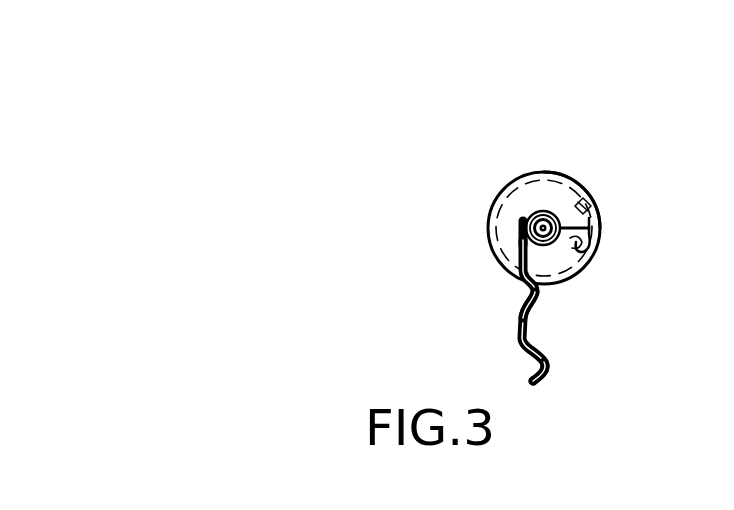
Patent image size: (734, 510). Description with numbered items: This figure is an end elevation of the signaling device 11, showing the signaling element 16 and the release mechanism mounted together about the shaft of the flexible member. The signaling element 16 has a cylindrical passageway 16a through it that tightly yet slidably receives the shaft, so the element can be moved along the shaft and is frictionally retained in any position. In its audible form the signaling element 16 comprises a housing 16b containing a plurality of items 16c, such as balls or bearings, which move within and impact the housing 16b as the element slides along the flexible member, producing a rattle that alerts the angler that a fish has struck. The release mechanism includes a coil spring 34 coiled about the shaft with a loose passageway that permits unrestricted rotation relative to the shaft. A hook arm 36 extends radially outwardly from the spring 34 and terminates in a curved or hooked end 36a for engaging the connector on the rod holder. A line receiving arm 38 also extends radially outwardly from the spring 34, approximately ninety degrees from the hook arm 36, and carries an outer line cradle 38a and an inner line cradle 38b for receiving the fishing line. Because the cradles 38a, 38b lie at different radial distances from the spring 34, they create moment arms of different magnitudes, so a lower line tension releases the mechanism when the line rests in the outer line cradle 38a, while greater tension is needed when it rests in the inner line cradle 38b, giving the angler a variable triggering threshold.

The signaling device 11 is at (322, 110).
The signaling element 16 is at (527, 172).
The cylindrical passageway 16a is at (521, 220).
The housing 16b is at (555, 173).
The items 16c is at (587, 176).
The coil spring 34 is at (532, 219).
The hook arm 36 is at (593, 197).
The hooked end 36a is at (600, 250).
The line receiving arm 38 is at (498, 264).
The outer line cradle 38a is at (550, 372).
The inner line cradle 38b is at (550, 308).